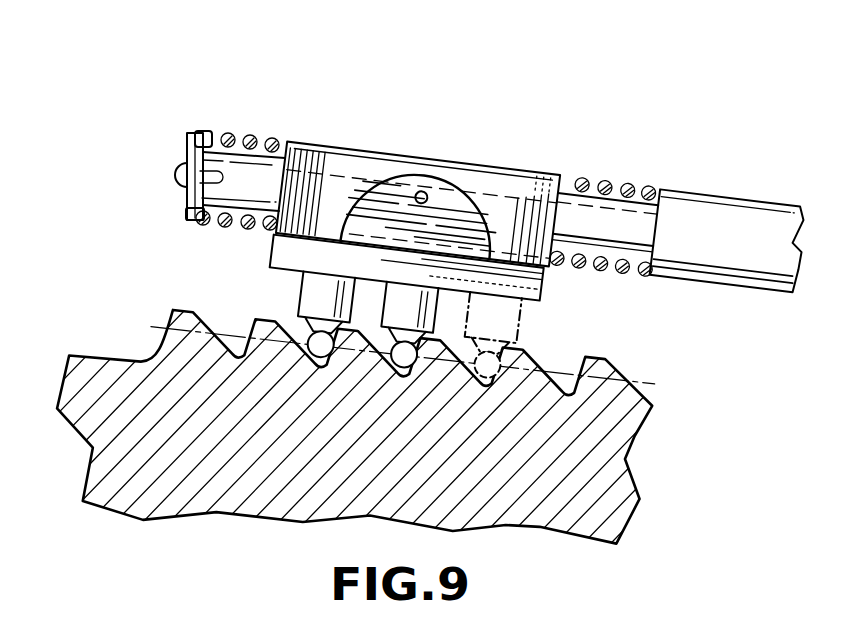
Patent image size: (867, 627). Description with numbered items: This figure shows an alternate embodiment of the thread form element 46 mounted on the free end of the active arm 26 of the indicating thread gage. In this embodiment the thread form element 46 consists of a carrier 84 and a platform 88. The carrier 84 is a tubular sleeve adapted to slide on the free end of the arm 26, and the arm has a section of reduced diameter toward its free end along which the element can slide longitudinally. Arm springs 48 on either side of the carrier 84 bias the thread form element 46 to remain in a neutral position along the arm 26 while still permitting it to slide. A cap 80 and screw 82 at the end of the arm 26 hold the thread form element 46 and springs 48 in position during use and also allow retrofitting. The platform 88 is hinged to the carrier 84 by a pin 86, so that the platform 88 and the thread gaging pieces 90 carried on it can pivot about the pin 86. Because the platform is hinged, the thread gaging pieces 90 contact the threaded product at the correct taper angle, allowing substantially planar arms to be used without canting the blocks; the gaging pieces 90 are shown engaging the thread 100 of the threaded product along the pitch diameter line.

The active arm 26 is at (707, 213).
The thread form element 46 is at (342, 190).
The arm springs 48 is at (249, 136).
The cap 80 is at (203, 131).
The screw 82 is at (181, 175).
The carrier 84 is at (313, 140).
The pin 86 is at (428, 190).
The platform 88 is at (548, 295).
The thread gaging pieces 90 is at (307, 343).
The thread 100 is at (636, 490).